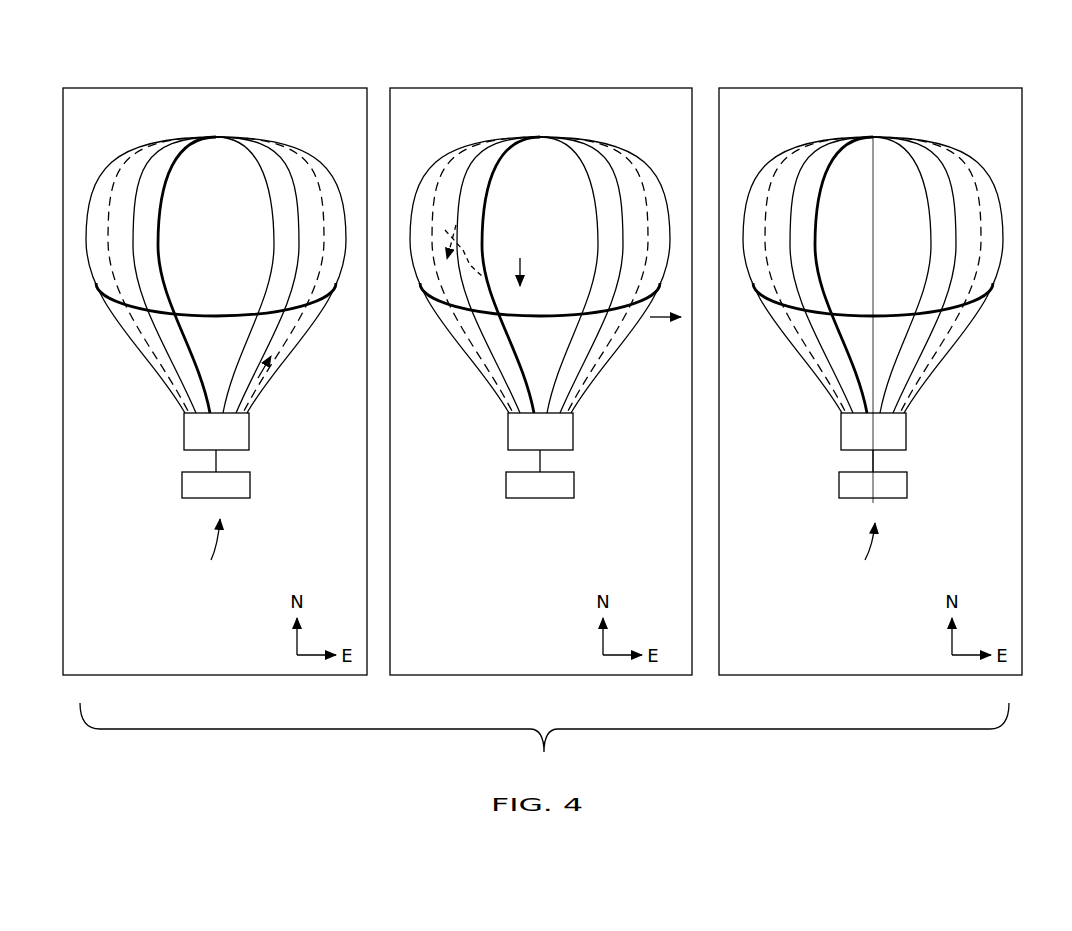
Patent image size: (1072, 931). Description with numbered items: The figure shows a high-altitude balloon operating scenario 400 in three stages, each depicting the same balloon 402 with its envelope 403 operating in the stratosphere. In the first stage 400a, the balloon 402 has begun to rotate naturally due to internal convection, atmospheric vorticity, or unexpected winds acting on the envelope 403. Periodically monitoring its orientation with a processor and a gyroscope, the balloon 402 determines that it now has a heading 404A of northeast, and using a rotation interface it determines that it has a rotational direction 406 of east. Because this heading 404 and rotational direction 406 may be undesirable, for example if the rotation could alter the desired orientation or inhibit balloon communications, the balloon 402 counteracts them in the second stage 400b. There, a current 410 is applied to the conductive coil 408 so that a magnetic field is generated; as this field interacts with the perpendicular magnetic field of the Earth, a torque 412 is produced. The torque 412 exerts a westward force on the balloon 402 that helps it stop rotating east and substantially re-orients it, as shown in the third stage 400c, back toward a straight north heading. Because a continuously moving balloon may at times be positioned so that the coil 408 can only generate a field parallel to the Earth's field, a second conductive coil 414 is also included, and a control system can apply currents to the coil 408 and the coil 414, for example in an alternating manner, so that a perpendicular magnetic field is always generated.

The scenario 400 is at (1037, 76).
The stage 400a is at (217, 88).
The stage 400b is at (542, 88).
The stage 400c is at (873, 88).
The balloon 402 is at (539, 310).
The envelope 403 is at (617, 272).
The heading 404 is at (652, 316).
The heading 404A is at (539, 552).
The rotational direction 406 is at (262, 372).
The conductive coil 408 is at (522, 275).
The current 410 is at (520, 256).
The torque 412 is at (421, 197).
The conductive coil 414 is at (540, 326).